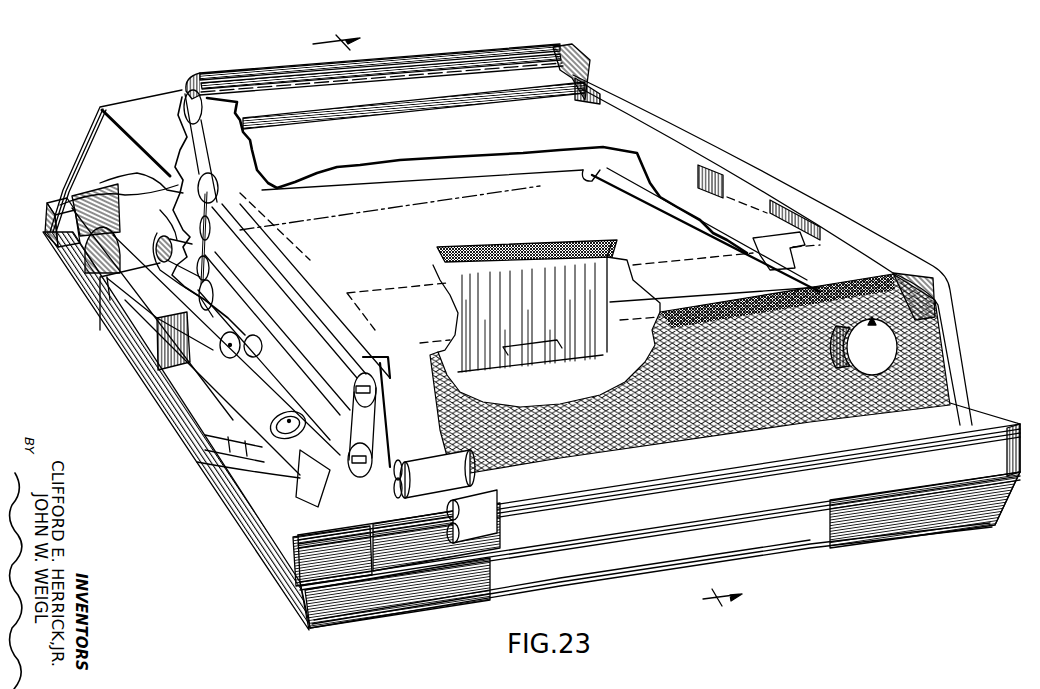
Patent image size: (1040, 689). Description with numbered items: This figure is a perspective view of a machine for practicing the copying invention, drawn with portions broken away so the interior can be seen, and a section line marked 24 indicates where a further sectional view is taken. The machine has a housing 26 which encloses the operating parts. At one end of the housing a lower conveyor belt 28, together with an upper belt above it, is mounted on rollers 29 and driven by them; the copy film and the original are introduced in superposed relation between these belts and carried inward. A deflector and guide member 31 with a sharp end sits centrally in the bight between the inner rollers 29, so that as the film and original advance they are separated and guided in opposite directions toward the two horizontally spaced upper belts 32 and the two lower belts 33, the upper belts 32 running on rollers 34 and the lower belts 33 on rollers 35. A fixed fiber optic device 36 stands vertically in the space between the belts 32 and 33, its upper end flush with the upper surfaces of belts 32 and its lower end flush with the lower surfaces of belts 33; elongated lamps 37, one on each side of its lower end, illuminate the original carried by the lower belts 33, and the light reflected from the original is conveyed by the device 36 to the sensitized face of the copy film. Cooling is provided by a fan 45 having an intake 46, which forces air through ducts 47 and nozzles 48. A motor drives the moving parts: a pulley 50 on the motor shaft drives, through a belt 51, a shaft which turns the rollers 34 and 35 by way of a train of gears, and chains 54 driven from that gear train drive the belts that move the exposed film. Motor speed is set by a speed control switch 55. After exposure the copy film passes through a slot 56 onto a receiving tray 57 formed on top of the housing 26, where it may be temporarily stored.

The section line 24 is at (508, 321).
The housing 26 is at (148, 105).
The lower conveyor belt 28 is at (492, 541).
The rollers 29 is at (462, 483).
The deflector and guide member 31 is at (387, 400).
The upper belts 32 is at (320, 348).
The lower belts 33 is at (365, 432).
The rollers 34 is at (373, 378).
The rollers 35 is at (350, 452).
The fiber optic device 36 is at (497, 360).
The elongated lamps 37 is at (297, 397).
The fan 45 is at (118, 185).
The intake 46 is at (97, 259).
The ducts 47 is at (148, 373).
The nozzles 48 is at (296, 436).
The pulley 50 is at (157, 256).
The belt 51 is at (174, 236).
The chains 54 is at (213, 200).
The speed control switch 55 is at (885, 348).
The slot 56 is at (580, 75).
The receiving tray 57 is at (578, 118).